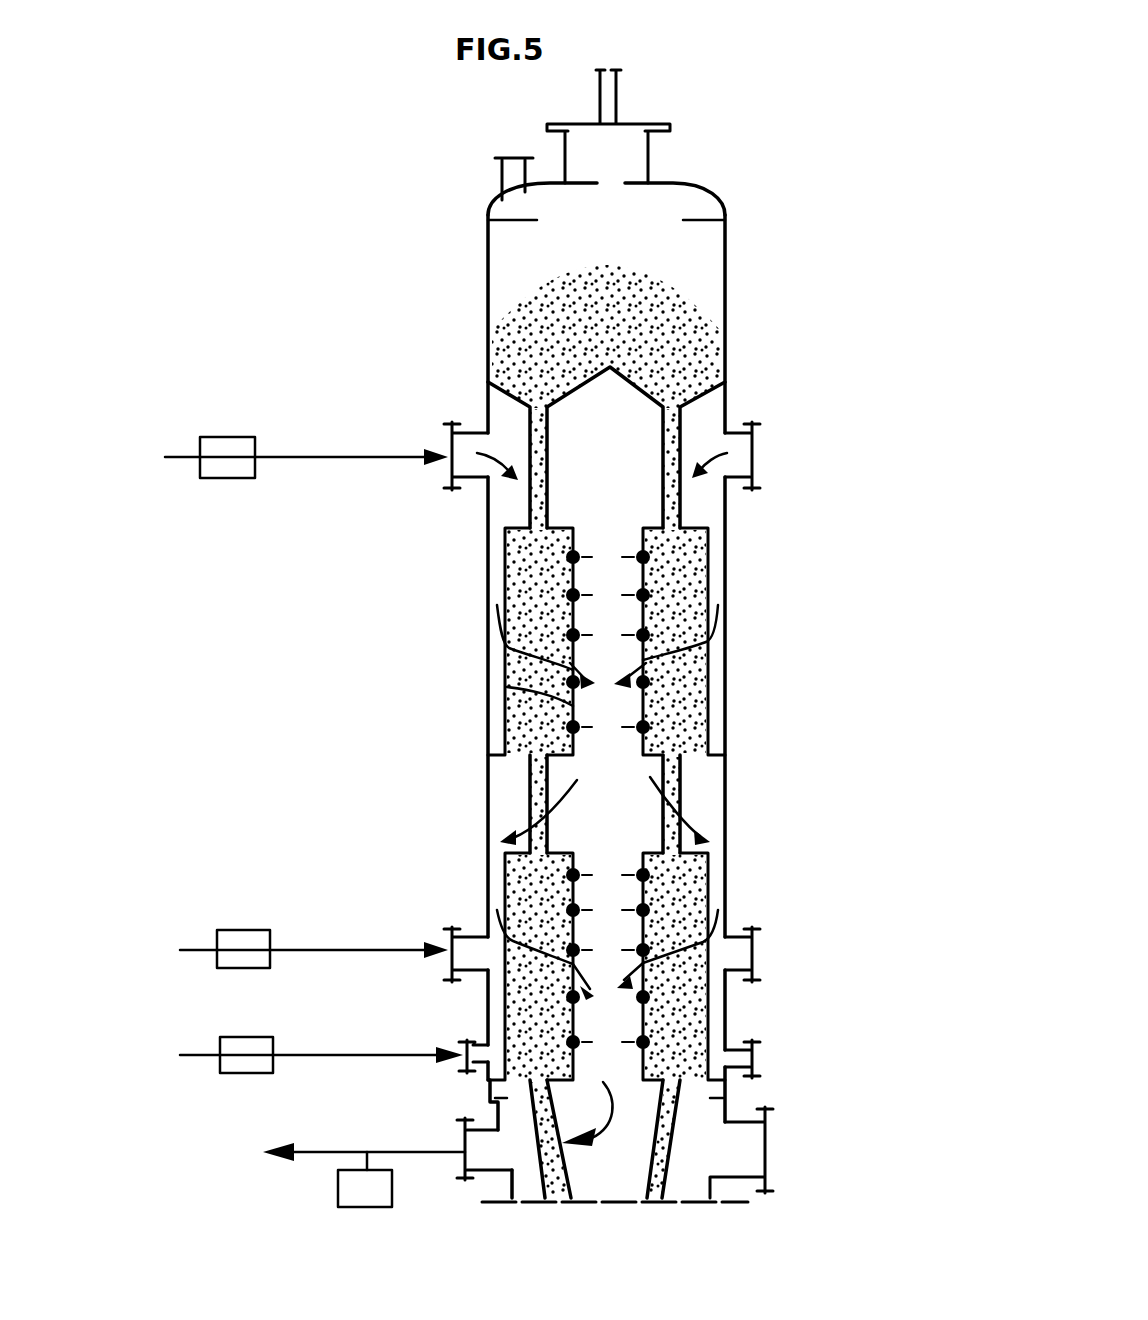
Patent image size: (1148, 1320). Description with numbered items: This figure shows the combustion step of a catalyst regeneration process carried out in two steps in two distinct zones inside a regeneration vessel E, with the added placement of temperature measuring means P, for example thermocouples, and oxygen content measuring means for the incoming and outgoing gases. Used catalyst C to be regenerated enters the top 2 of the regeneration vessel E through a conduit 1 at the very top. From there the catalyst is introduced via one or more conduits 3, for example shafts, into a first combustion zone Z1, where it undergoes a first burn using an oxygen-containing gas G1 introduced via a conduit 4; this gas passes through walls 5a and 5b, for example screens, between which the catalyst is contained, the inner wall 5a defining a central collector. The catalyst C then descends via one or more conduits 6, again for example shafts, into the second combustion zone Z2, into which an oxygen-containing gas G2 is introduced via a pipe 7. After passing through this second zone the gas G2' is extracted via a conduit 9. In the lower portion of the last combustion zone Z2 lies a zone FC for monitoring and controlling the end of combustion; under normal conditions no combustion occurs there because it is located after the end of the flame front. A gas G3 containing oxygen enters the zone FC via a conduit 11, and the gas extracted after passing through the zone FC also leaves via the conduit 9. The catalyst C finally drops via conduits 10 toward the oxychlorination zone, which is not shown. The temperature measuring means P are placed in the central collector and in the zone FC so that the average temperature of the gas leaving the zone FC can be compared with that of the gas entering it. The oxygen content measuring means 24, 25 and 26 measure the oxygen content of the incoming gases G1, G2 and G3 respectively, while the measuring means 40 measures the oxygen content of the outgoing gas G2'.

The conduit 1 is at (617, 83).
The regeneration vessel E is at (687, 185).
The top 2 is at (693, 257).
The used catalyst C is at (690, 347).
The conduits 3 is at (683, 437).
The conduit 4 is at (386, 460).
The inner wall 5a is at (577, 684).
The wall 5b is at (507, 558).
The first combustion zone Z1 is at (687, 562).
The second combustion zone Z2 is at (683, 893).
The temperature measuring means P is at (608, 800).
The conduits 6 is at (693, 780).
The pipe 7 is at (318, 953).
The conduit 9 is at (323, 1155).
The conduits 10 is at (680, 1157).
The conduit 11 is at (328, 1057).
The oxygen content measuring means 24 is at (227, 457).
The oxygen content measuring means 25 is at (243, 949).
The oxygen content measuring means 26 is at (246, 1055).
The oxygen content measuring means 40 is at (365, 1179).
The monitoring and control zone FC is at (683, 1077).
The oxygen-containing gas G1 is at (306, 439).
The oxygen-containing gas G2 is at (334, 947).
The oxygen-containing gas G3 is at (334, 1046).
The extracted gas G2' is at (387, 1145).